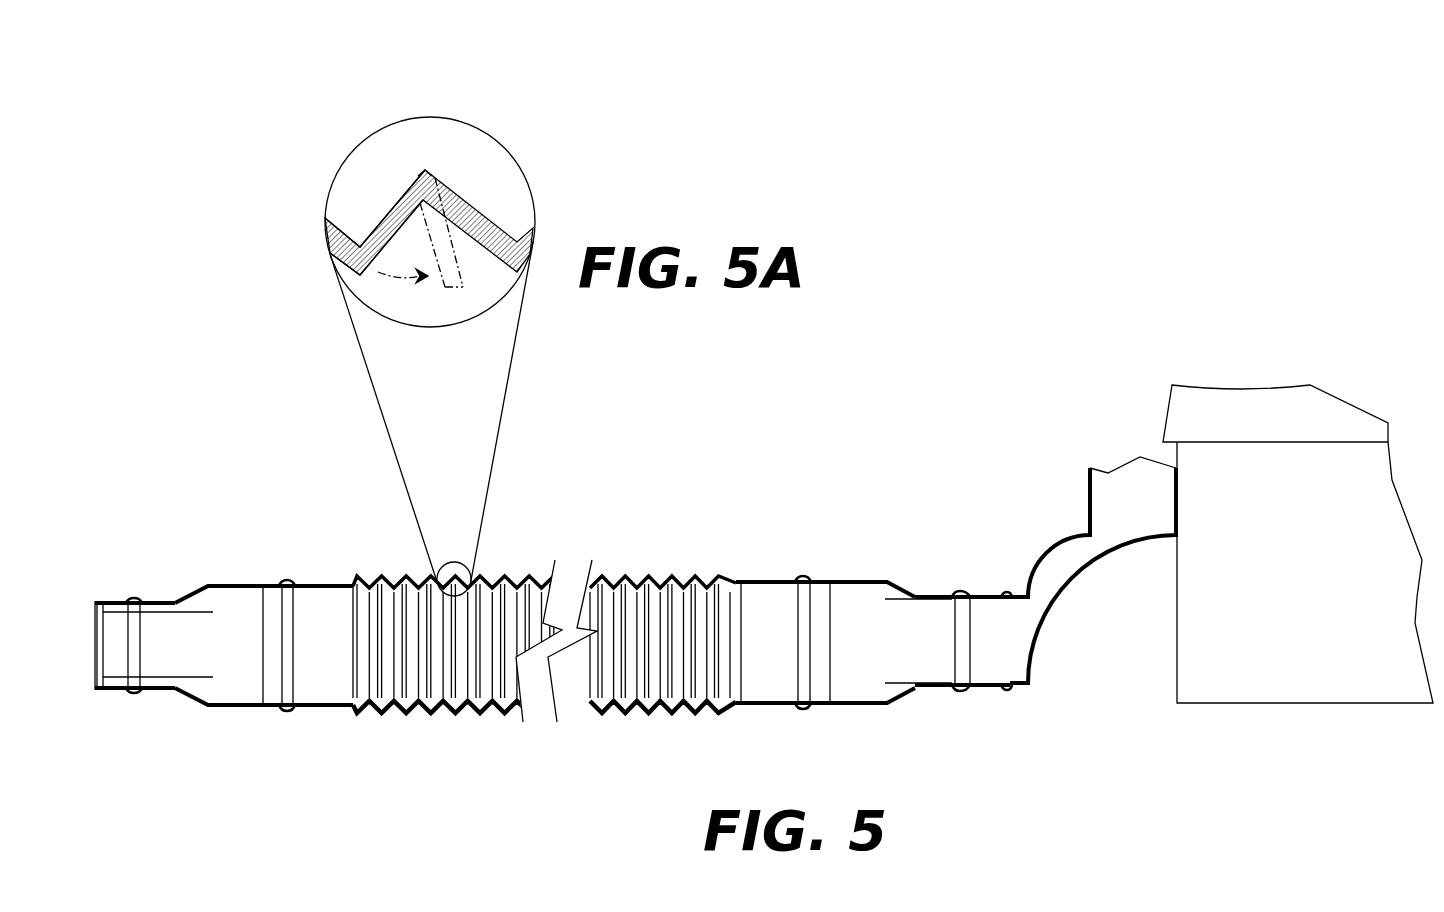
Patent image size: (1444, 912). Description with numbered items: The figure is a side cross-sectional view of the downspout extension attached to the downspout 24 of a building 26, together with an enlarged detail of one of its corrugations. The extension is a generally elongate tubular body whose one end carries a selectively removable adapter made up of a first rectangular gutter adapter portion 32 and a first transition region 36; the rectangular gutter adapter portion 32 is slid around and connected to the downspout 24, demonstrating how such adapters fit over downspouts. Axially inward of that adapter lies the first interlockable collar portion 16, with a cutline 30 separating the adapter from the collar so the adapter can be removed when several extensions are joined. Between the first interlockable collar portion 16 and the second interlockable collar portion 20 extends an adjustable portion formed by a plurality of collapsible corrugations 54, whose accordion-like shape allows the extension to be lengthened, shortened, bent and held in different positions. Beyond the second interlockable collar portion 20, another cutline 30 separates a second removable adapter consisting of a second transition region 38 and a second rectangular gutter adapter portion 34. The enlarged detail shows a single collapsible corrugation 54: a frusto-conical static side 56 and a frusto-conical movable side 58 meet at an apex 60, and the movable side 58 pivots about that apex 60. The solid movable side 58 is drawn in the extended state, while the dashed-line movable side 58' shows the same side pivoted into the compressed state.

In FIG. 5, the first interlockable collar portion 16 is at (825, 557).
In FIG. 5, the second interlockable collar portion 20 is at (260, 572).
In FIG. 5, the downspout 24 is at (1038, 641).
In FIG. 5, the building 26 is at (1248, 570).
In FIG. 5, the cutlines 30 is at (260, 623).
In FIG. 5, the first rectangular gutter adapter portion 32 is at (918, 587).
In FIG. 5, the second rectangular gutter adapter portion 34 is at (92, 572).
In FIG. 5, the first transition region 36 is at (825, 557).
In FIG. 5, the second transition region 38 is at (177, 572).
In FIG. 5, the collapsible corrugations 54 is at (598, 578).
In FIG. 5A, the static side 56 is at (455, 192).
In FIG. 5A, the movable side 58 is at (357, 190).
In FIG. 5A, the dashed-line movable side 58' is at (482, 210).
In FIG. 5A, the apex 60 is at (425, 168).